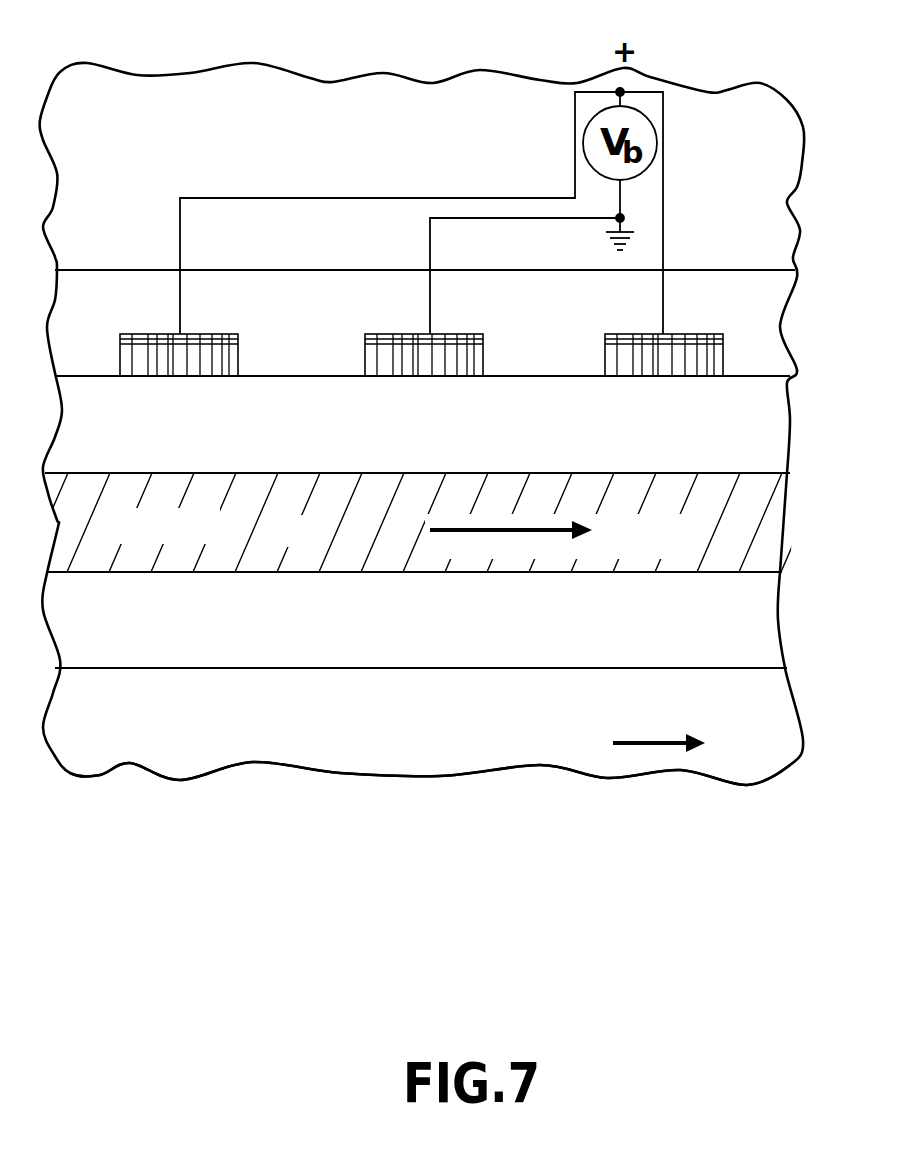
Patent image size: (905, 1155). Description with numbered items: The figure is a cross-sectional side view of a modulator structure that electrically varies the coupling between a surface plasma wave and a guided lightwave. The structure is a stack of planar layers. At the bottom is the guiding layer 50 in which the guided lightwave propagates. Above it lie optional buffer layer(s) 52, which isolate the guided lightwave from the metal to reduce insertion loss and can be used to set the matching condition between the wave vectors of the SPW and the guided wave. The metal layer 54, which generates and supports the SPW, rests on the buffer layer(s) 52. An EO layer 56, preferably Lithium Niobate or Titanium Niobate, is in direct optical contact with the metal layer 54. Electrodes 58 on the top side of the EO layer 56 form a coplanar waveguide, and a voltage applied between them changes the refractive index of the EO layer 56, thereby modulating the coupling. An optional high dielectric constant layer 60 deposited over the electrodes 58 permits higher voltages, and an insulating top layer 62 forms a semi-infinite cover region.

The top layer 62 is at (153, 172).
The electrodes 58 is at (683, 335).
The optional layer 60 is at (553, 369).
The EO layer 56 is at (337, 444).
The metal layer 54 is at (300, 544).
The buffer layer 52 is at (337, 641).
The guiding layer 50 is at (435, 734).